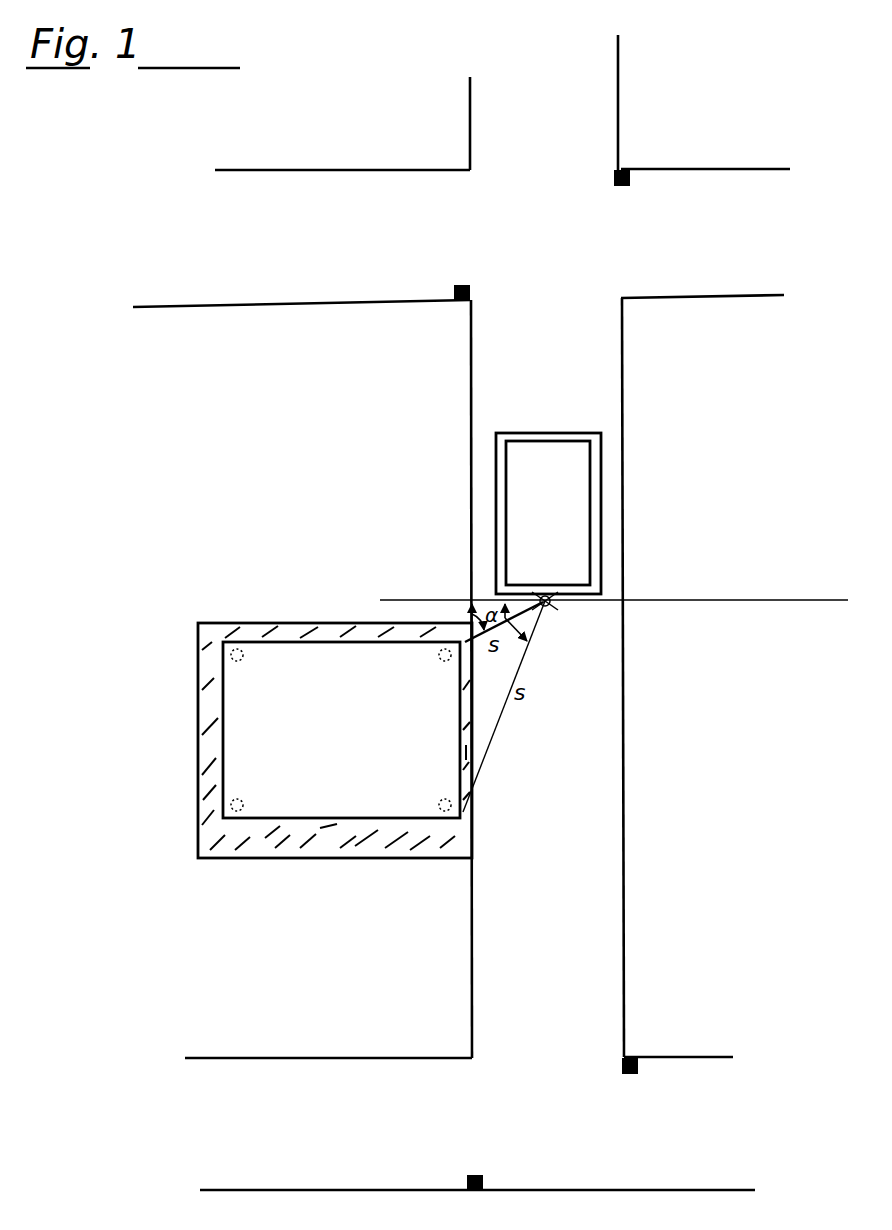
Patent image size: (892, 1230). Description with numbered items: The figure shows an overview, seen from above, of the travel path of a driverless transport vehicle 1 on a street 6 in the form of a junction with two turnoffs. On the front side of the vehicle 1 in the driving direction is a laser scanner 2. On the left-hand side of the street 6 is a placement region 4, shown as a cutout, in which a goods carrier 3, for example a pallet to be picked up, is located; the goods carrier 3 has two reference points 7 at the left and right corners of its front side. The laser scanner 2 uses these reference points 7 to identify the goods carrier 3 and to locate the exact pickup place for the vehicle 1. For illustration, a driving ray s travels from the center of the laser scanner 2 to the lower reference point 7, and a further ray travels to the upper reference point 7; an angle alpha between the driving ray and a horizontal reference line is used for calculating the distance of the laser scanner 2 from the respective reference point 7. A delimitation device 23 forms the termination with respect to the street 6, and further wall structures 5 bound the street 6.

The transport vehicle 1 is at (601, 511).
The laser scanner 2 is at (550, 604).
The goods carrier 3 is at (349, 771).
The placement region 4 is at (317, 622).
The wall / structure 5 is at (620, 177).
The street 6 is at (547, 363).
The reference points 7 is at (466, 643).
The delimitation device 23 is at (460, 712).